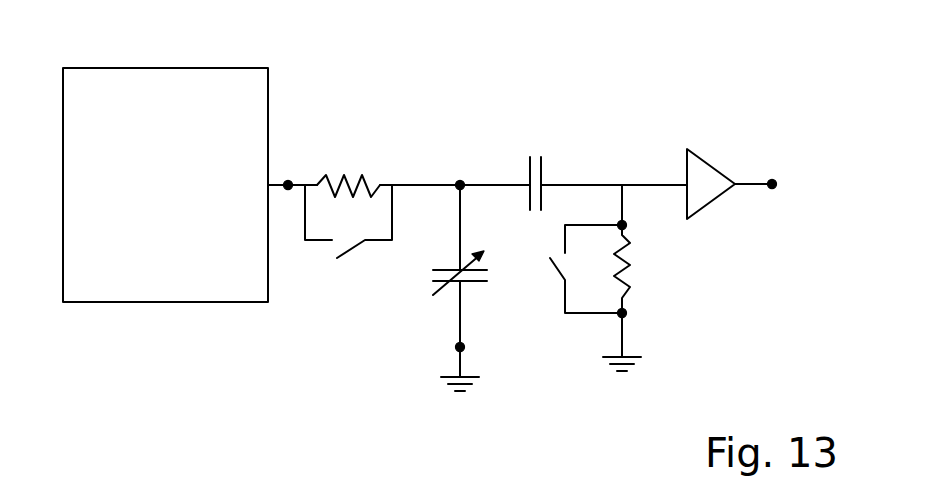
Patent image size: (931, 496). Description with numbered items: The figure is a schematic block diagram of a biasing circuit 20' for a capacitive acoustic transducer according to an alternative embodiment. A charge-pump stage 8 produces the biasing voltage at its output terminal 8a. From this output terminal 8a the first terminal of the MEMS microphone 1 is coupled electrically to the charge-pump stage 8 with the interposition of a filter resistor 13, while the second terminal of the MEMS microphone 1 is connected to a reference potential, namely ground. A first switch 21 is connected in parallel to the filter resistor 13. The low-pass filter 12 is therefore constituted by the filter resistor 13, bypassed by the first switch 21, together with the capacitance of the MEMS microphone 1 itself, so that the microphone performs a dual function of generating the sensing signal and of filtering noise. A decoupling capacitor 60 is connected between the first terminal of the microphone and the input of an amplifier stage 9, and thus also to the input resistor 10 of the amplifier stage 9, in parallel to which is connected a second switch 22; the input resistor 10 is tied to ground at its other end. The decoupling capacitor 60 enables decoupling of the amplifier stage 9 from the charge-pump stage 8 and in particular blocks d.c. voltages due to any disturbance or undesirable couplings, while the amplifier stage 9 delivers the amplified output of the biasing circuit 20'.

The charge-pump stage 8 is at (242, 287).
The output terminal of the charge-pump stage 8a is at (289, 190).
The filter resistor 13 is at (365, 178).
The first switch 21 is at (347, 250).
The low-pass filter 12 is at (399, 164).
The MEMS microphone 1 is at (446, 284).
The decoupling capacitor 60 is at (535, 152).
The biasing circuit 20' is at (637, 106).
The second switch 22 is at (548, 260).
The input resistor 10 is at (626, 287).
The amplifier stage 9 is at (710, 175).